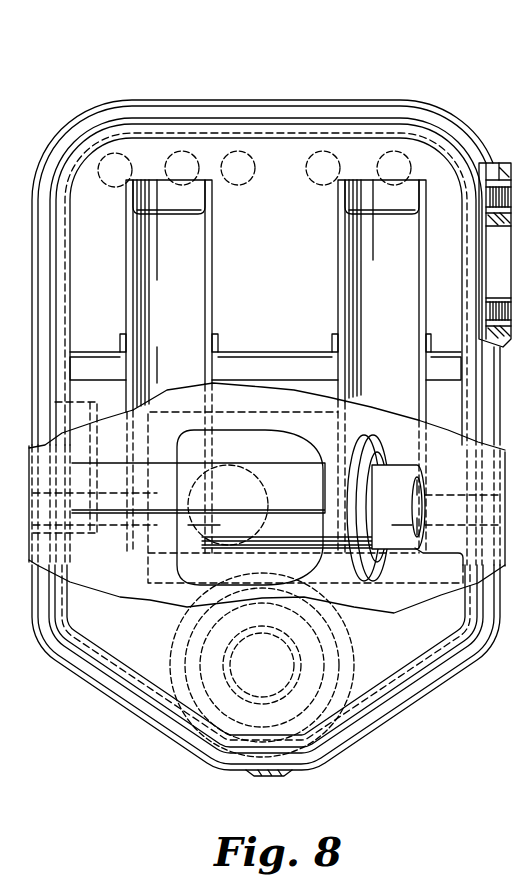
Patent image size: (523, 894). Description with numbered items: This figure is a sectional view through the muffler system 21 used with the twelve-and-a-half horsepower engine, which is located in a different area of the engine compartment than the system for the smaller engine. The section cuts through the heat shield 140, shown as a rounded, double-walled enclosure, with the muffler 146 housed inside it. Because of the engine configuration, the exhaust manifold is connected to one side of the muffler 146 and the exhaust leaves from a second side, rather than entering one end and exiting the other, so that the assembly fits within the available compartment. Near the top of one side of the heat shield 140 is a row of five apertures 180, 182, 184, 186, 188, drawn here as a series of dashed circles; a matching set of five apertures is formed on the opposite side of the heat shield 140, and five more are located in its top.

The muffler system 21 is at (208, 62).
The heat shield 140 is at (347, 84).
The muffler 146 is at (412, 160).
The aperture 180 is at (473, 117).
The aperture 182 is at (320, 152).
The aperture 184 is at (241, 150).
The aperture 186 is at (178, 152).
The aperture 188 is at (100, 155).